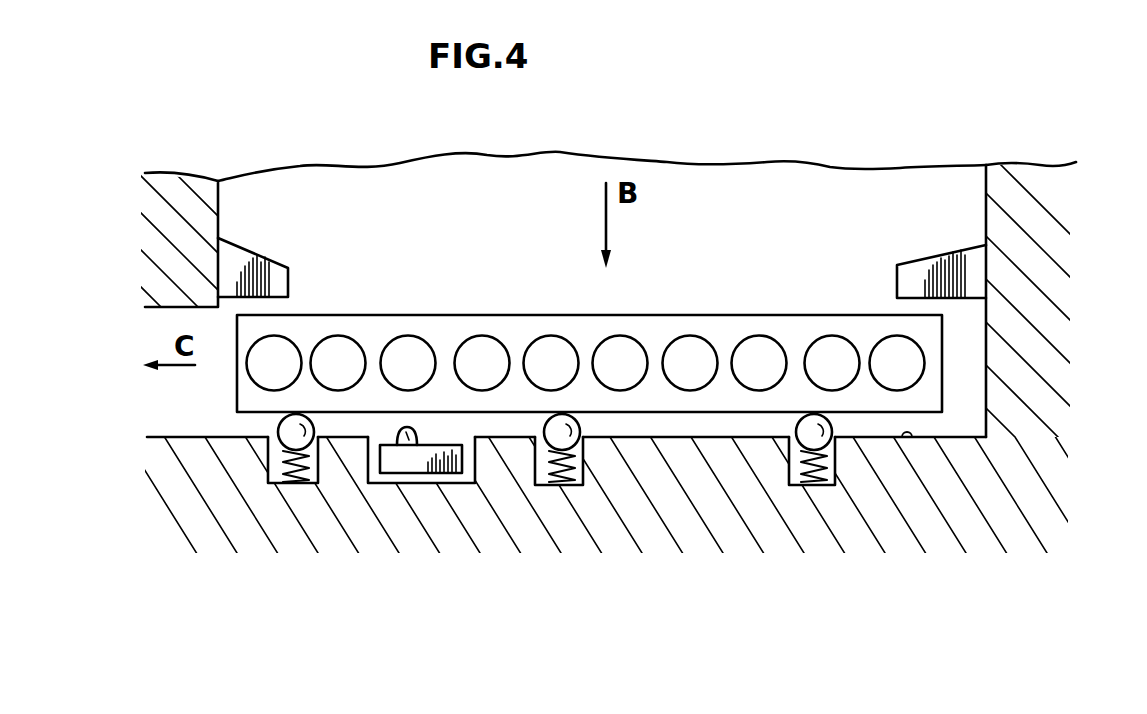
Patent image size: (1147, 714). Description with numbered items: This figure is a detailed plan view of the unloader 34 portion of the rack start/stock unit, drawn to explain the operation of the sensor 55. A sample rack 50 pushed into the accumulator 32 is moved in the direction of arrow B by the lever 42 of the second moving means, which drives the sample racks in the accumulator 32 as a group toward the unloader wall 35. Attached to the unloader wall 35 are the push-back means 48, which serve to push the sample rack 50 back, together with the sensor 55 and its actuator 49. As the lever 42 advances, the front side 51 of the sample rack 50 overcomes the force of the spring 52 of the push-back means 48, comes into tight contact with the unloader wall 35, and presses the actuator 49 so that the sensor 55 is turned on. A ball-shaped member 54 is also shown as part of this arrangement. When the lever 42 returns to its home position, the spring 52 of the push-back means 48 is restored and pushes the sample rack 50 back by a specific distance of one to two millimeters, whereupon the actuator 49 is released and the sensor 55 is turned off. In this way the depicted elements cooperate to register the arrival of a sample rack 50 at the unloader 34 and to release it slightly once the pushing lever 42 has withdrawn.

The accumulator 32 is at (820, 197).
The unloader 34 is at (212, 380).
The unloader wall 35 is at (912, 437).
The lever 42 is at (252, 272).
The push-back means 48 is at (312, 502).
The actuator 49 is at (392, 431).
The sample rack 50 is at (943, 350).
The front side 51 is at (940, 413).
The spring 52 is at (292, 481).
The ball-shaped member 54 is at (315, 440).
The stop block 55 is at (445, 474).